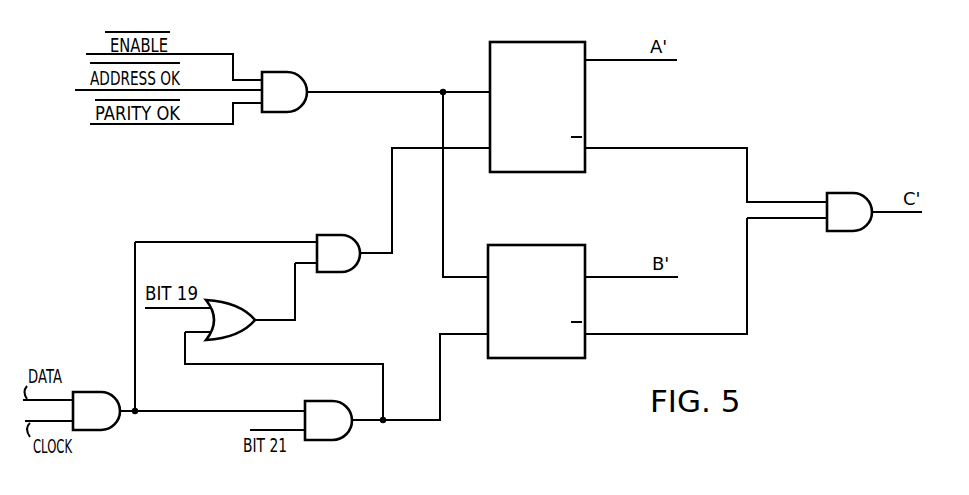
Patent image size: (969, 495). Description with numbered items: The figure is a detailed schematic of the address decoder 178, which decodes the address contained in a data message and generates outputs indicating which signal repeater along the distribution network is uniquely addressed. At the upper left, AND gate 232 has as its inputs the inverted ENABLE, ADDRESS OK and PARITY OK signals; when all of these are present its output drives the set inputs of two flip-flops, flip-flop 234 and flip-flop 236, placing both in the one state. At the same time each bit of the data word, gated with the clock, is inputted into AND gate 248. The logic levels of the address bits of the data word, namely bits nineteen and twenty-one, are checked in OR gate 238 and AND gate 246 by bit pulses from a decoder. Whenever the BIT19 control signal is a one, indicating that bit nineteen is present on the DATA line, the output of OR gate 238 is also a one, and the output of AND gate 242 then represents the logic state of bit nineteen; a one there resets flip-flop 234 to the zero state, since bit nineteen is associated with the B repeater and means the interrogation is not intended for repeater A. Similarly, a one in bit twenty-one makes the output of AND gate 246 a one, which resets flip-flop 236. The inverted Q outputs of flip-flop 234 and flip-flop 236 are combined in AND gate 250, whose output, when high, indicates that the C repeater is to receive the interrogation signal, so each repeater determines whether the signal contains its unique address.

The address decoder 178 is at (490, 457).
The AND gate 232 is at (288, 71).
The flip-flop 234 is at (510, 42).
The flip-flop 236 is at (562, 245).
The OR gate 238 is at (247, 332).
The AND gate 242 is at (347, 215).
The AND gate 246 is at (349, 437).
The AND gate 248 is at (116, 426).
The AND gate 250 is at (853, 231).